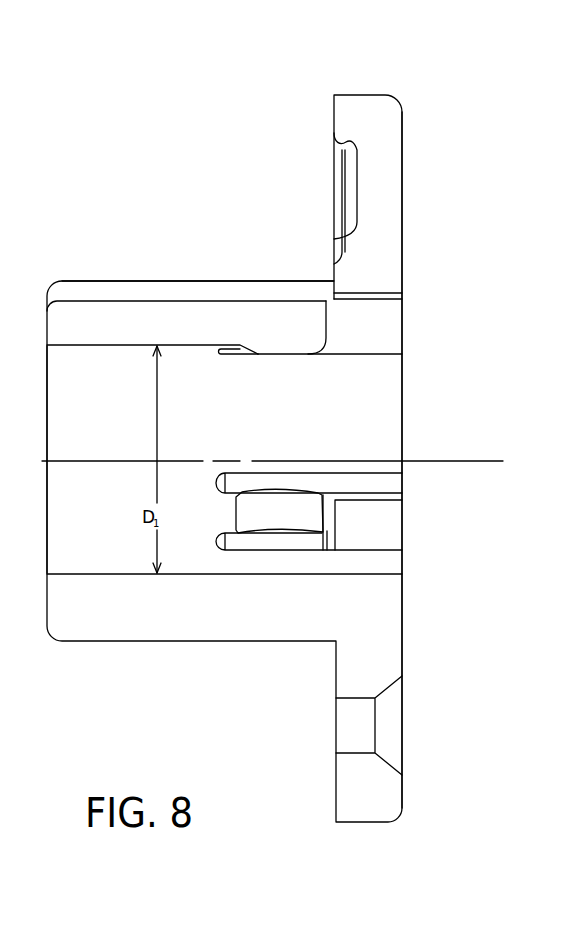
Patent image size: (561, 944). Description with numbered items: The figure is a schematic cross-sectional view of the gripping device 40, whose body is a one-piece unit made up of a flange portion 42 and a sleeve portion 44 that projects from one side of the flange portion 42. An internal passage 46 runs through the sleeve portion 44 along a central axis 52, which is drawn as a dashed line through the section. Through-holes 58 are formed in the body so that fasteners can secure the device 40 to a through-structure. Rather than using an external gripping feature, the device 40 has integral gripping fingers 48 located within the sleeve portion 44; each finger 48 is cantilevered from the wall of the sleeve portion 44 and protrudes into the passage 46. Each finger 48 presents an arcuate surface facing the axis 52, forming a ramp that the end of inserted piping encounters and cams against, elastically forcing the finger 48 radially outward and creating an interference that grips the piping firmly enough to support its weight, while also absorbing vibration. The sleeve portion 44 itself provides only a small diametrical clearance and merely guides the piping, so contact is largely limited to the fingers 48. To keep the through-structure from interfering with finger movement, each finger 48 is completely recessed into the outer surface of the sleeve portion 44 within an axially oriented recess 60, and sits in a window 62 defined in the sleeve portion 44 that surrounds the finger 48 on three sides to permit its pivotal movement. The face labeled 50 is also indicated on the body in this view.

The gripping device 40 is at (488, 133).
The flange portion 42 is at (353, 109).
The sleeve portion 44 is at (205, 628).
The internal passage 46 is at (383, 355).
The integral gripping features (fingers) 48 is at (285, 340).
The mounting face 50 is at (400, 257).
The central axis 52 is at (455, 459).
The through-holes 58 is at (393, 737).
The recess 60 is at (252, 300).
The window 62 is at (333, 520).